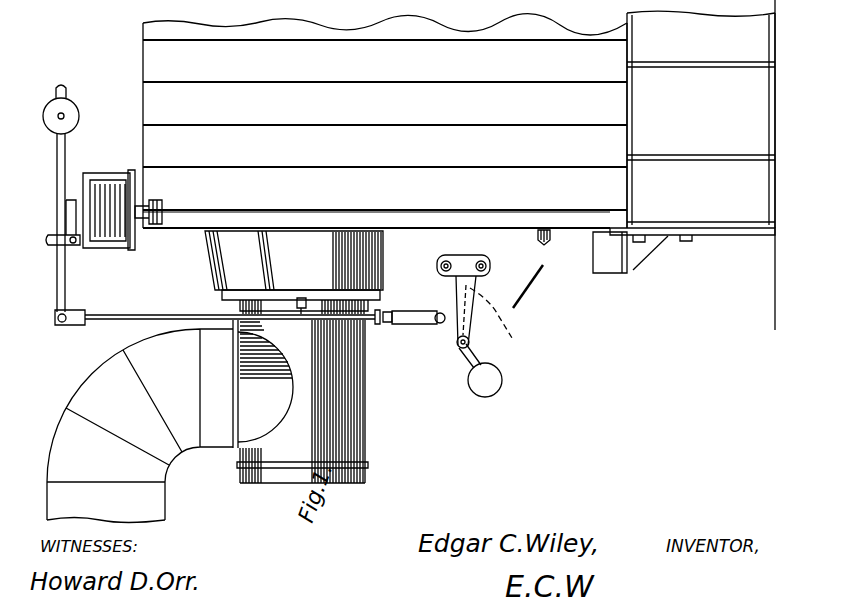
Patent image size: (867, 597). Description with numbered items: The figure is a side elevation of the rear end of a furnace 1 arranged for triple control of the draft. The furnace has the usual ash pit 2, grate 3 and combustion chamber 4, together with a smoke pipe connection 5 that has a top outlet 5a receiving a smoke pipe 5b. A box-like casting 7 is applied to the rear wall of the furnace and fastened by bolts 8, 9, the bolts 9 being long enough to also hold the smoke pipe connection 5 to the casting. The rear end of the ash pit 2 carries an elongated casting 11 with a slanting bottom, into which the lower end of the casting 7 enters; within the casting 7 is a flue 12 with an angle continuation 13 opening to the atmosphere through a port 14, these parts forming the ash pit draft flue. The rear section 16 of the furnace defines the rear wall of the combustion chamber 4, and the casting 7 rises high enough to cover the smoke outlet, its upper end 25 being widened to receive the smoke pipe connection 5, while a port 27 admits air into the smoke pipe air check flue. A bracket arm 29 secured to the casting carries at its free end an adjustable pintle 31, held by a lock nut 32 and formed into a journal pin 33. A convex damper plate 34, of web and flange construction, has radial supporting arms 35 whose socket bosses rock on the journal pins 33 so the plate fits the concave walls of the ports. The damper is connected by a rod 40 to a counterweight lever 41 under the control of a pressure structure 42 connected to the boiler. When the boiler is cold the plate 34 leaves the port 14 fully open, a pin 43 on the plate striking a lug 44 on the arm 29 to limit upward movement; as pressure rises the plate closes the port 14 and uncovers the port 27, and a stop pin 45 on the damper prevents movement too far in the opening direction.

The furnace 1 is at (385, 121).
The ash pit 2 is at (232, 256).
The grate 3 is at (692, 126).
The combustion chamber 4 is at (463, 218).
The smoke pipe connection 5 is at (370, 445).
The top outlet 5a is at (263, 384).
The smoke pipe 5b is at (140, 426).
The casting 7 is at (430, 292).
The bolts 8 is at (545, 246).
The bolts 9 is at (302, 314).
The elongated casting 11 is at (633, 272).
The flue 12 is at (573, 253).
The angle continuation 13 is at (525, 282).
The port 14 is at (528, 298).
The rear section 16 is at (508, 228).
The upper end of the casting 25 is at (332, 260).
The port 27 is at (423, 292).
The bracket arm 29 is at (468, 333).
The adjustable pintles 31 is at (463, 346).
The lock nuts 32 is at (460, 346).
The journal pins 33 is at (475, 336).
The damper plate 34 is at (398, 311).
The radial supporting arms 35 is at (452, 304).
The rod 40 is at (147, 315).
The counterweight lever 41 is at (57, 175).
The pressure structure 42 is at (108, 172).
The pin 43 is at (482, 292).
The lug 44 is at (496, 324).
The stop pin 45 is at (415, 325).